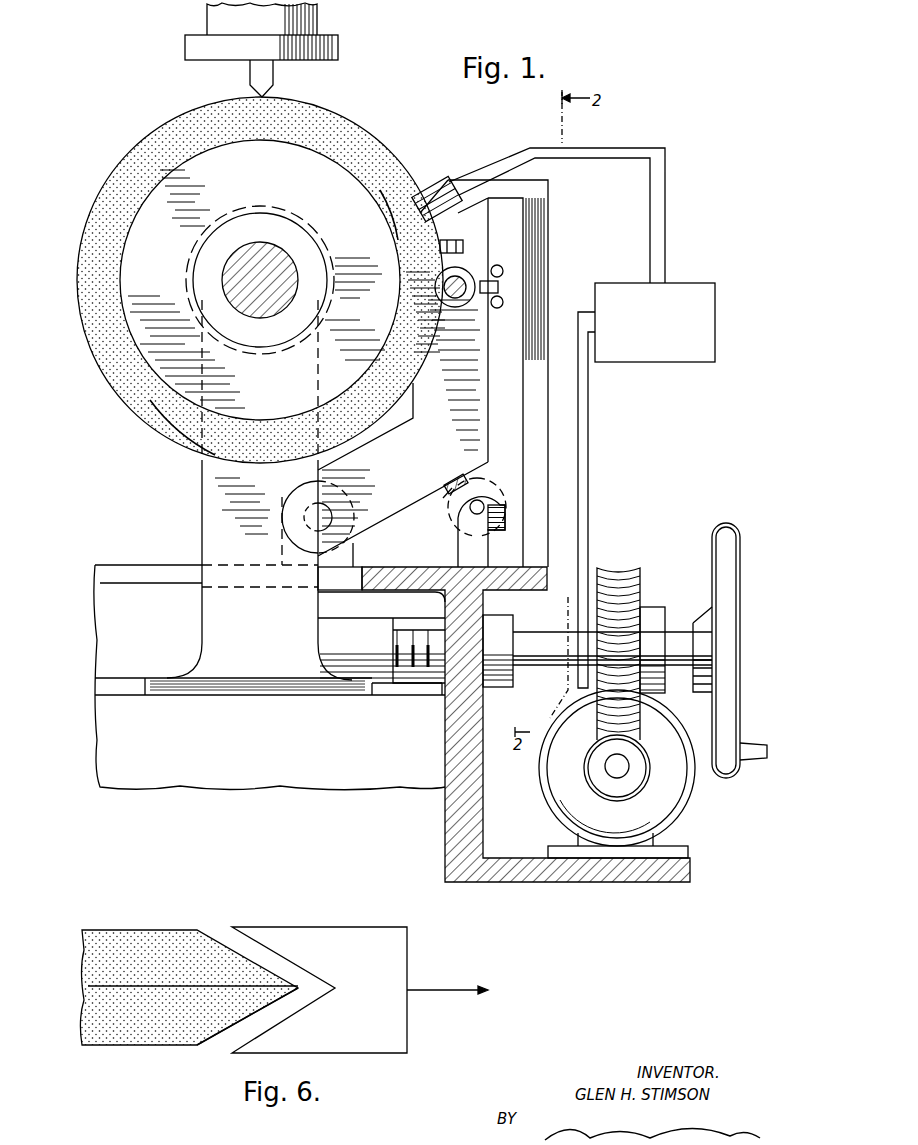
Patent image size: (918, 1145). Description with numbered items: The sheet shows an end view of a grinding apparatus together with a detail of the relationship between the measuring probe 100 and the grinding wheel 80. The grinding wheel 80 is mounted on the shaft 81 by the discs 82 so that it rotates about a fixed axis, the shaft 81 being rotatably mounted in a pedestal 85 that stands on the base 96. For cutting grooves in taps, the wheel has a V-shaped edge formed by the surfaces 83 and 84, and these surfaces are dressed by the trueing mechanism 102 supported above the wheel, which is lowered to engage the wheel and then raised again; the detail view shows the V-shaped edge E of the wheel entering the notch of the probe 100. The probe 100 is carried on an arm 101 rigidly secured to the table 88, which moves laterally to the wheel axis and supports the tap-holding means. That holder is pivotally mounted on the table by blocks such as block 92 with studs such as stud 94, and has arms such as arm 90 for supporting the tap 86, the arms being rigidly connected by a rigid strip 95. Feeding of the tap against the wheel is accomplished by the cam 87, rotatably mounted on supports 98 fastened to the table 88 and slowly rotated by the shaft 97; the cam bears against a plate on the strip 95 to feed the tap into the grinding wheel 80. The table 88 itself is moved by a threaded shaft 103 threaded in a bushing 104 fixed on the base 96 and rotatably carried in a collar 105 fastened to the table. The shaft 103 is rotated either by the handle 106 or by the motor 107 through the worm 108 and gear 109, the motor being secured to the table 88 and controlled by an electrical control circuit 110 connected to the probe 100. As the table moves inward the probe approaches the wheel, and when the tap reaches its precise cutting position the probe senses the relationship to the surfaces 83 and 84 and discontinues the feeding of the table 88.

In FIG. 1, the grinding wheel 80 is at (357, 140).
In FIG. 1, the shaft 81 is at (233, 318).
In FIG. 1, the discs 82 is at (148, 348).
In FIG. 6, the surface 83 is at (215, 935).
In FIG. 1, the surface 84 is at (392, 158).
In FIG. 6, the surface 84 is at (222, 1033).
In FIG. 1, the pedestal 85 is at (227, 408).
In FIG. 1, the tap 86 is at (473, 259).
In FIG. 1, the cam 87 is at (514, 505).
In FIG. 1, the table 88 is at (503, 569).
In FIG. 1, the arm 90 is at (480, 372).
In FIG. 1, the block 92 is at (343, 552).
In FIG. 1, the stud 94 is at (306, 490).
In FIG. 1, the rigid strip 95 is at (455, 491).
In FIG. 1, the base 96 is at (268, 733).
In FIG. 1, the shaft 97 is at (448, 483).
In FIG. 1, the supports 98 is at (460, 546).
In FIG. 1, the probe 100 is at (445, 178).
In FIG. 6, the probe 100 is at (398, 966).
In FIG. 1, the arm 101 is at (540, 222).
In FIG. 1, the trueing mechanism 102 is at (341, 25).
In FIG. 1, the threaded shaft 103 is at (543, 641).
In FIG. 1, the bushing 104 is at (388, 621).
In FIG. 1, the collar 105 is at (498, 688).
In FIG. 1, the handle 106 is at (724, 532).
In FIG. 1, the motor 107 is at (672, 818).
In FIG. 1, the worm 108 is at (601, 783).
In FIG. 1, the gear 109 is at (640, 578).
In FIG. 1, the electrical control circuit 110 is at (698, 331).
In FIG. 6, the edge E is at (248, 946).